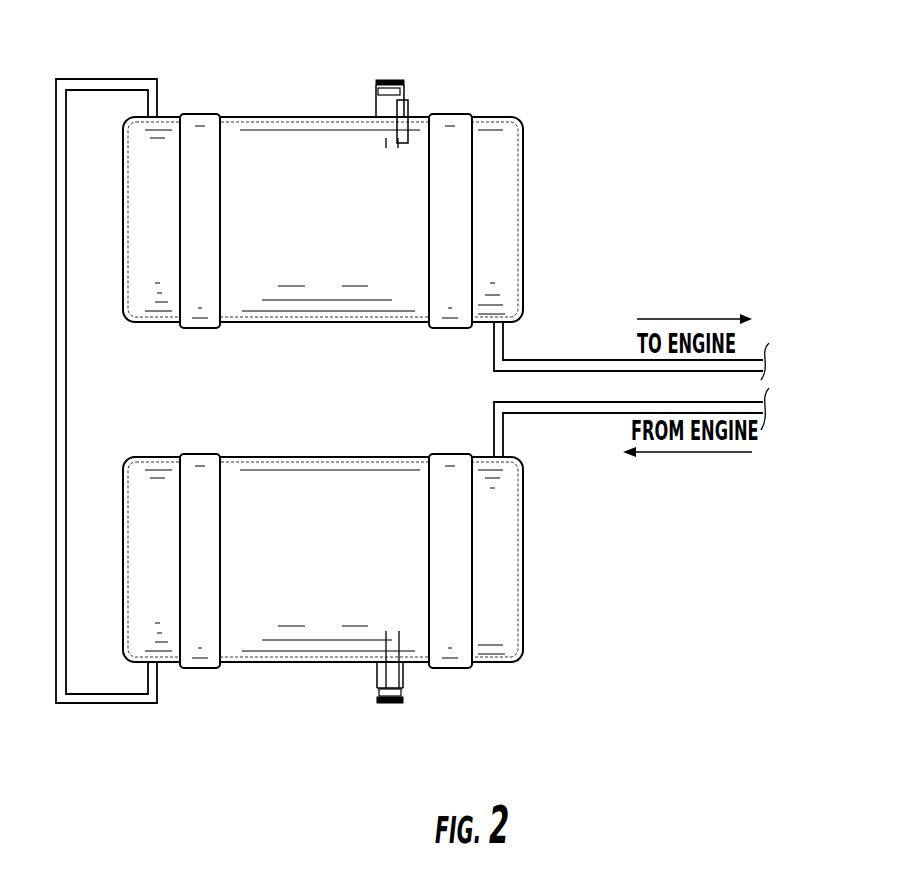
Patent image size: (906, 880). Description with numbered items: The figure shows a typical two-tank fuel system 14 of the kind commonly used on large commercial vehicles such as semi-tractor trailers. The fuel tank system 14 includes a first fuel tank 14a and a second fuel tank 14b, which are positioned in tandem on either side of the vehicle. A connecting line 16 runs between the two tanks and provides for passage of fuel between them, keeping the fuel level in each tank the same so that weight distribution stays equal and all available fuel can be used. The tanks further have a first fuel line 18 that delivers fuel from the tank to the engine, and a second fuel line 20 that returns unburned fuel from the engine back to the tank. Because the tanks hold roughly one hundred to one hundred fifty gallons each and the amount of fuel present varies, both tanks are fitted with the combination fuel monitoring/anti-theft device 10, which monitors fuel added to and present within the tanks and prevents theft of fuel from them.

The combination fuel monitoring/anti-theft device 10 is at (402, 73).
The fuel tank system 14 is at (517, 104).
The first fuel tank 14a is at (345, 208).
The second fuel tank 14b is at (343, 573).
The connecting line 16 is at (66, 375).
The first fuel line 18 is at (558, 359).
The second fuel line 20 is at (558, 415).